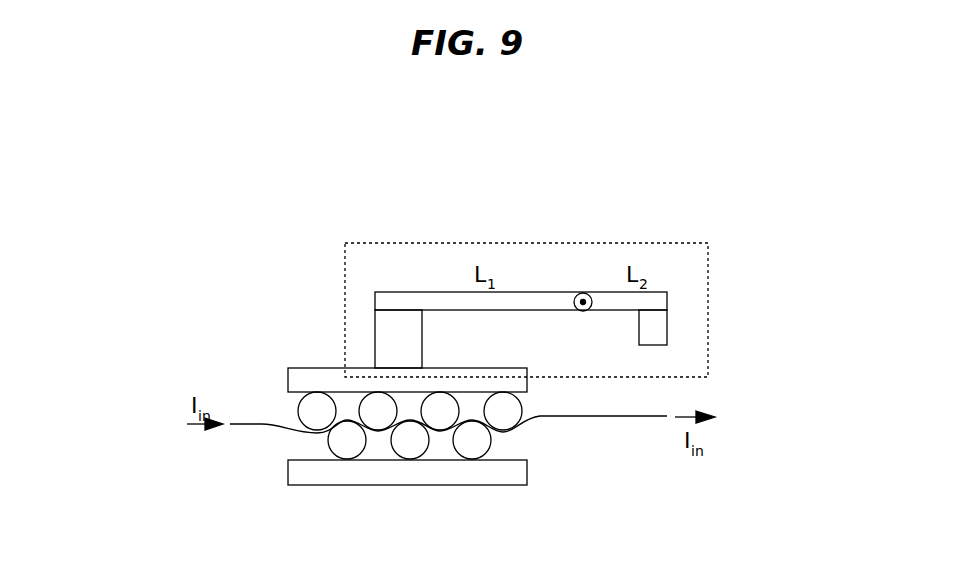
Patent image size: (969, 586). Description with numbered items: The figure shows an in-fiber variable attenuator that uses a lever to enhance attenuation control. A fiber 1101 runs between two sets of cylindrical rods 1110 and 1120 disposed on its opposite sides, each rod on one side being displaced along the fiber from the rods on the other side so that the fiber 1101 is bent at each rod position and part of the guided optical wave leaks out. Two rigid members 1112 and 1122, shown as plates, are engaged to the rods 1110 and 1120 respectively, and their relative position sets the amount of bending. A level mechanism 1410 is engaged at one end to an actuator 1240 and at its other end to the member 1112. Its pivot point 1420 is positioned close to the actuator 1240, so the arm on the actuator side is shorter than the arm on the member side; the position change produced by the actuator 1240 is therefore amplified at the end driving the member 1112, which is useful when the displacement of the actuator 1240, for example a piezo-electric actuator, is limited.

The level mechanism 1410 is at (440, 301).
The pivot point 1420 is at (583, 311).
The actuator 1240 is at (660, 330).
The rigid member 1112 is at (297, 367).
The cylindrical rods 1110 is at (307, 410).
The cylindrical rods 1120 is at (472, 446).
The rigid member 1122 is at (368, 474).
The fiber 1101 is at (250, 427).